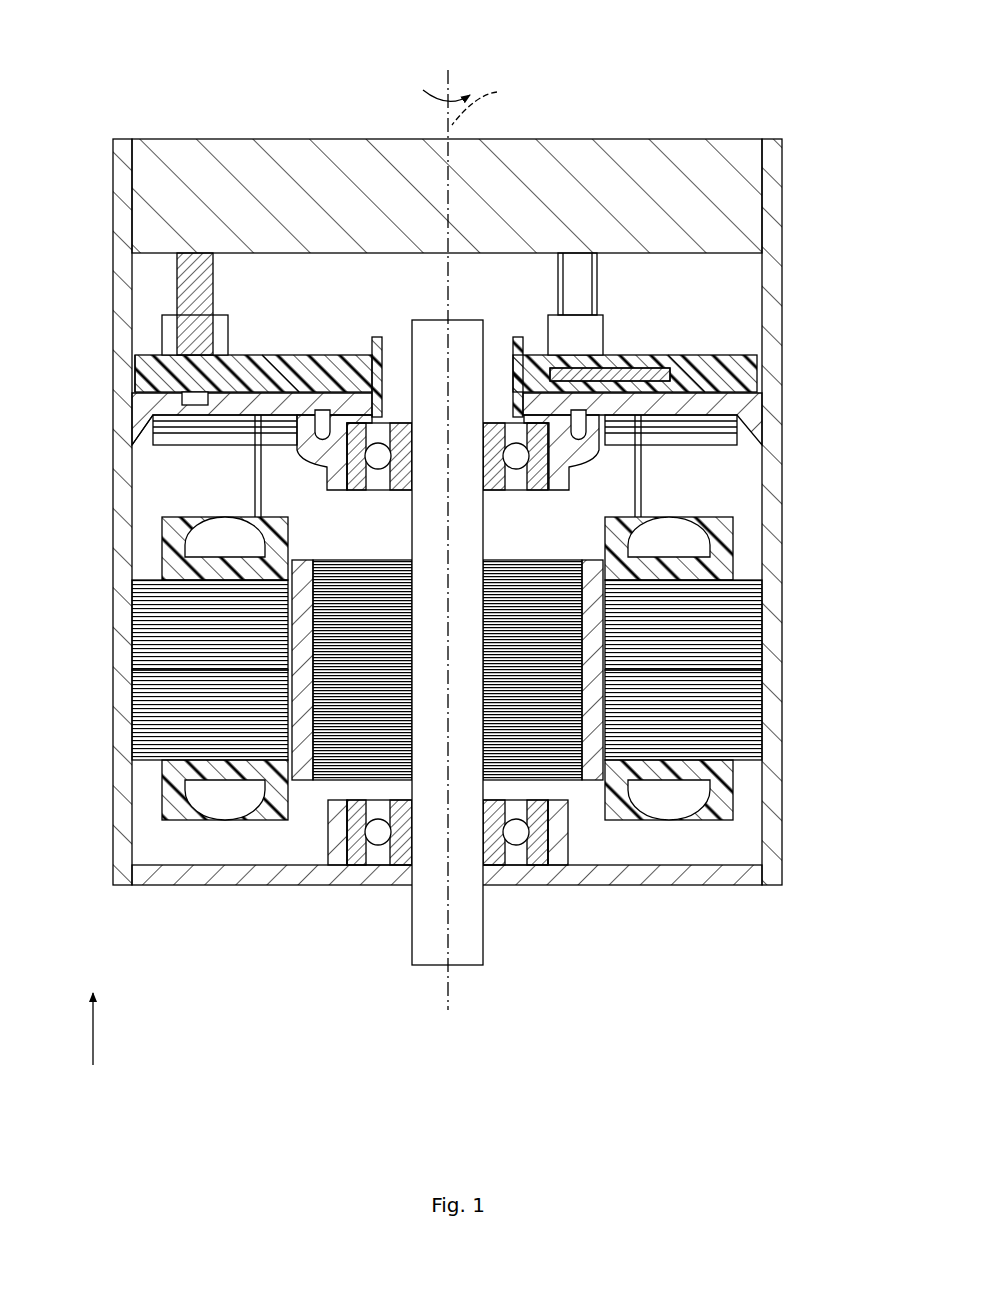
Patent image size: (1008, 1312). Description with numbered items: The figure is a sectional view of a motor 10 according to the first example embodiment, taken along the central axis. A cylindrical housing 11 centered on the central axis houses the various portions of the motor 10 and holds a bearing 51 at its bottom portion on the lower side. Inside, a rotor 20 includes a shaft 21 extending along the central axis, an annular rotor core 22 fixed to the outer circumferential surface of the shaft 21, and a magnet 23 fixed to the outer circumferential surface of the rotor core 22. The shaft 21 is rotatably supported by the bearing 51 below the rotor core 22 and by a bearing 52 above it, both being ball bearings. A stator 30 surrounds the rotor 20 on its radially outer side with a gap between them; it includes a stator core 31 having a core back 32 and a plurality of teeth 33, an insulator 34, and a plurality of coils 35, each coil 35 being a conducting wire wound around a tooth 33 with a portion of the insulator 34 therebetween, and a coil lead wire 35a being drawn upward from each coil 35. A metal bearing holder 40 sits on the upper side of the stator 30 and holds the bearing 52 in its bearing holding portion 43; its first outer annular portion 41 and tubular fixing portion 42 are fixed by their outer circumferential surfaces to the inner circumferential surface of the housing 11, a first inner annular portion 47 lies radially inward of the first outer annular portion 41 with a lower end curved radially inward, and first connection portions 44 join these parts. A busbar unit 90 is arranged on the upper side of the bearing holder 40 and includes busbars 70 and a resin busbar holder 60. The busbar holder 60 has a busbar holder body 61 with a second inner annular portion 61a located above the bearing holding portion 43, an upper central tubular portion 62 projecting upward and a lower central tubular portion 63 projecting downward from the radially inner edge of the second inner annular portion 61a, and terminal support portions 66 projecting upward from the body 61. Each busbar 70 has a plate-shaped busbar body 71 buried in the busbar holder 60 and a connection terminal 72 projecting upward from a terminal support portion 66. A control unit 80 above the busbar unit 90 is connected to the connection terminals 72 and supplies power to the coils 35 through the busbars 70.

The motor 10 is at (463, 534).
The housing 11 is at (472, 481).
The rotor 20 is at (442, 653).
The shaft 21 is at (478, 937).
The rotor core 22 is at (335, 765).
The magnet 23 is at (300, 770).
The stator 30 is at (467, 687).
The stator core 31 is at (506, 670).
The core back 32 is at (745, 648).
The teeth 33 is at (480, 715).
The insulator 34 is at (720, 775).
The coils 35 is at (207, 540).
The coil lead wire 35a is at (257, 478).
The bearing holder 40 is at (404, 409).
The first outer annular portion 41 is at (148, 360).
The tubular fixing portion 42 is at (140, 420).
The bearing holding portion 43 is at (318, 470).
The first connection portions 44 is at (268, 385).
The first inner annular portion 47 is at (321, 415).
The bearing 51 is at (517, 842).
The bearing 52 is at (518, 464).
The busbar holder 60 is at (453, 255).
The busbar holder body 61 is at (768, 362).
The second inner annular portion 61a is at (348, 375).
The upper central tubular portion 62 is at (514, 372).
The lower central tubular portion 63 is at (381, 404).
The terminal support portions 66 is at (225, 330).
The busbars 70 is at (416, 227).
The busbar body 71 is at (636, 370).
The connection terminal 72 is at (200, 253).
The control unit 80 is at (748, 205).
The busbar unit 90 is at (453, 230).